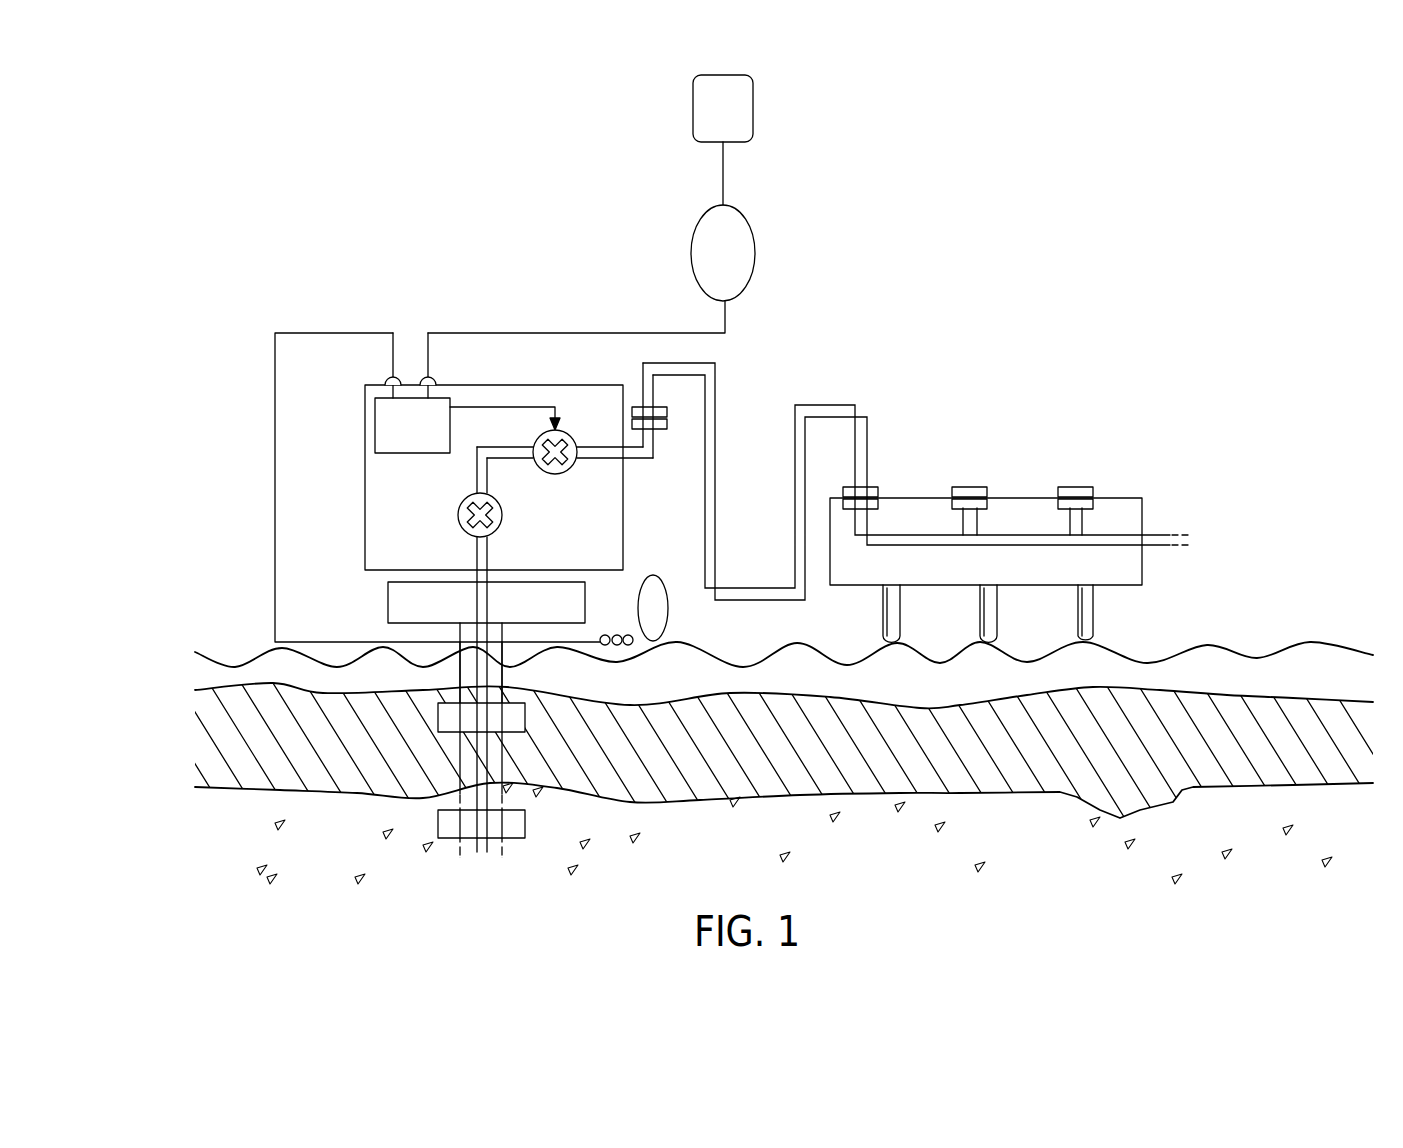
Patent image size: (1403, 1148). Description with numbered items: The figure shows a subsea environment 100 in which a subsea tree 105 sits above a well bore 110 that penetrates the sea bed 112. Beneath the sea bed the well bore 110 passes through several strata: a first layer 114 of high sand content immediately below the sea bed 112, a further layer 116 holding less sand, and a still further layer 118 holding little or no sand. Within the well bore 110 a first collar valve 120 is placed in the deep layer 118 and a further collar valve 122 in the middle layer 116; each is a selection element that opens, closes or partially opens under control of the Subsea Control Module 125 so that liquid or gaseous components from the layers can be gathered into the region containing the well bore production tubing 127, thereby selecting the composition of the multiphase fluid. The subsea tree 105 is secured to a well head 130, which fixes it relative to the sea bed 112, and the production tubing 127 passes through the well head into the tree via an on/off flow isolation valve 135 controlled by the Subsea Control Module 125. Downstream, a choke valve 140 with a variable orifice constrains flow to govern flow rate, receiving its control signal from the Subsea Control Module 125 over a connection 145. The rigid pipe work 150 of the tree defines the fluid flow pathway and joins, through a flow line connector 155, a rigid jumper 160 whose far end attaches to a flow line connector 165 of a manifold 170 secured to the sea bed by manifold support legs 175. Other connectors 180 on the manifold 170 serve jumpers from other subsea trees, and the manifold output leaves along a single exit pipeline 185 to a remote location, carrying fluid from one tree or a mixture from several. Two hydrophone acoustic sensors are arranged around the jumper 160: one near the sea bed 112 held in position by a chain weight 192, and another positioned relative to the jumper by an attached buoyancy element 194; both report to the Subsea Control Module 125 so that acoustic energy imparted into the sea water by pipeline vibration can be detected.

The subsea environment 100 is at (926, 248).
The subsea tree 105 is at (1133, 92).
The well bore 110 is at (505, 762).
The sea bed 112 is at (1313, 642).
The first layer 114 is at (1330, 687).
The further layer 116 is at (1223, 747).
The still further layer 118 is at (990, 848).
The first collar valve 120 is at (527, 823).
The further collar valve 122 is at (438, 715).
The Subsea Control Module 125 is at (375, 418).
The well bore production tubing 127 is at (480, 676).
The well head 130 is at (388, 600).
The on/off flow isolation valve 135 is at (458, 515).
The choke valve 140 is at (557, 475).
The connection 145 is at (497, 407).
The pipe work 150 is at (655, 462).
The flow line connector 155 is at (641, 403).
The jumper 160 is at (715, 397).
The flow line connector 165 is at (876, 478).
The manifold 170 is at (1142, 570).
The manifold support legs 175 is at (883, 622).
The other connectors 180 is at (970, 487).
The exit pipeline 185 is at (1177, 533).
The chain weight 192 is at (617, 633).
The buoyancy element 194 is at (742, 113).